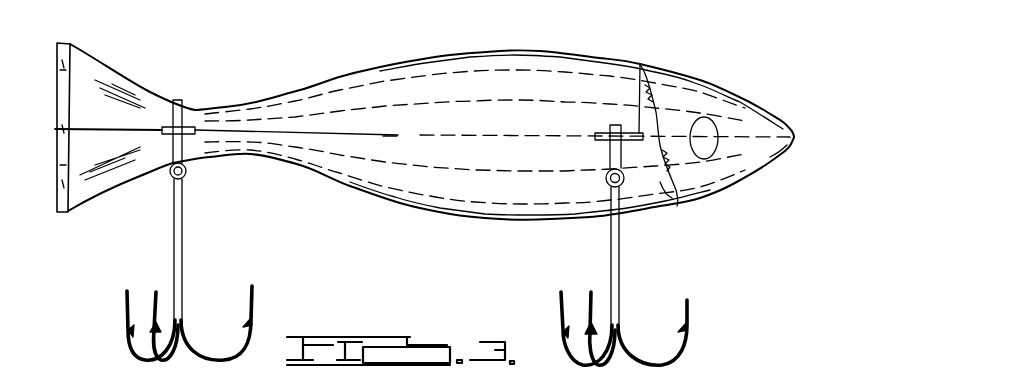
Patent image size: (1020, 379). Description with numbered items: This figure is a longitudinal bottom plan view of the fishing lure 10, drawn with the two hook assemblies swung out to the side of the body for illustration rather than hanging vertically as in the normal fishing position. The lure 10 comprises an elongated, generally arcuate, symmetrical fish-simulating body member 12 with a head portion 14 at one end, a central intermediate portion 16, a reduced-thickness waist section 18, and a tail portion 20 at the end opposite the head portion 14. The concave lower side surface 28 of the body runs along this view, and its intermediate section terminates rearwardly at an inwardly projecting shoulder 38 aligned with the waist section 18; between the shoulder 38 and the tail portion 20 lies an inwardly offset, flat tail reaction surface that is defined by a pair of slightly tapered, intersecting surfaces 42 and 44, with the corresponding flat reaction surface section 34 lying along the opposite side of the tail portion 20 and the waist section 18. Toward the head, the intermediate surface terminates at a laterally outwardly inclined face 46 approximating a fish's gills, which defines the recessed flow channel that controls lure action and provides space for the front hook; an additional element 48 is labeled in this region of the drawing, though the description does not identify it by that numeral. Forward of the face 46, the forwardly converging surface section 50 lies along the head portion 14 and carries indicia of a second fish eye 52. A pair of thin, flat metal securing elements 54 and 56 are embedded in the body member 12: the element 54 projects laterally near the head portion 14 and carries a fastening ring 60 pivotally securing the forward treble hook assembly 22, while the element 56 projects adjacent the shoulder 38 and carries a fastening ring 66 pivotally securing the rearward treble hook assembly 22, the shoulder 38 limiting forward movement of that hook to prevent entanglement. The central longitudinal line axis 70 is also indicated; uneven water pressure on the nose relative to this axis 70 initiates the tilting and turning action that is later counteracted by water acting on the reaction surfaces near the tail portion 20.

The fishing lure 10 is at (400, 60).
The body member 12 is at (462, 170).
The head portion 14 is at (747, 113).
The intermediate portion 16 is at (473, 73).
The waist section 18 is at (232, 97).
The tail portion 20 is at (88, 75).
The treble hook assemblies 22 is at (183, 222).
The side surface (recessed area / flow channel) 28 is at (443, 145).
The reaction surface section 34 is at (55, 195).
The shoulder 38 is at (182, 110).
The tapered surface 42 is at (77, 86).
The tapered surface 44 is at (77, 153).
The inclined face 46 is at (672, 198).
The partition wall 48 is at (640, 140).
The forwardly converging surface section 50 is at (770, 157).
The second fish eye 52 is at (707, 118).
The securing element 54 is at (602, 125).
The securing element 56 is at (164, 122).
The fastening ring 60 is at (607, 161).
The fastening ring 66 is at (187, 152).
The central longitudinal line axis 70 is at (383, 137).